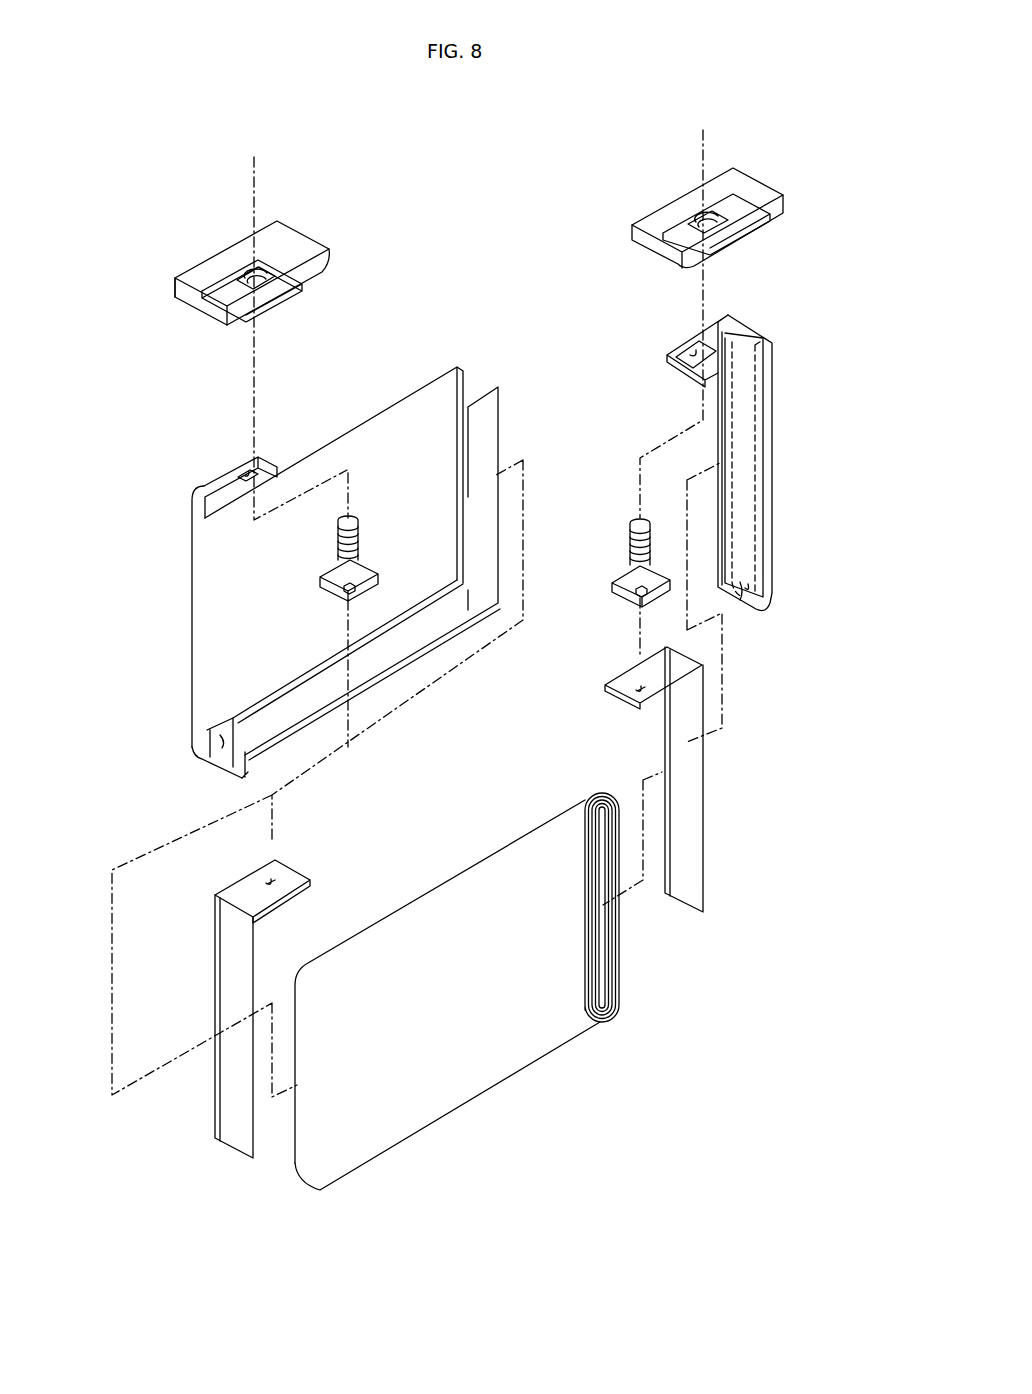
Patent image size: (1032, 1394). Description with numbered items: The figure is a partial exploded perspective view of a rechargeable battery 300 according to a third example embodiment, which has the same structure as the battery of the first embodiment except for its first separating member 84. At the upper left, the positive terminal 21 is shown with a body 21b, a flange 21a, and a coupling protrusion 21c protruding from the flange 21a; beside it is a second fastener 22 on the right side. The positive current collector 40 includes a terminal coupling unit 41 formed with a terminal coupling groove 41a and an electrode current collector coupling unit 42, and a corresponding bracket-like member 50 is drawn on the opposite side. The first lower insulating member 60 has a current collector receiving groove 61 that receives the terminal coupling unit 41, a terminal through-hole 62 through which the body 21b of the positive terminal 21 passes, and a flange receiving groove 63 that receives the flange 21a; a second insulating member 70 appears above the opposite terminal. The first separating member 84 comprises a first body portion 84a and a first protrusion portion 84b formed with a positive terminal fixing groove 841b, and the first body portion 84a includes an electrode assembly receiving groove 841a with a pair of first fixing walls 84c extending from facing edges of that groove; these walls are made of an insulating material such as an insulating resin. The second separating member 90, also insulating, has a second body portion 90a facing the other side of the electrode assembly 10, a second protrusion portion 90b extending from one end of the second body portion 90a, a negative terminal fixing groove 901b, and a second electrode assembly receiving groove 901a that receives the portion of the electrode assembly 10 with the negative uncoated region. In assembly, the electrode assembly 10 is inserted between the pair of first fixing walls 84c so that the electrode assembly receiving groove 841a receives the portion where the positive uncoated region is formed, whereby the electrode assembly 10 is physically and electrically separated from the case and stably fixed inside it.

The rechargeable battery 300 is at (456, 135).
The electrode assembly 10 is at (625, 996).
The positive terminal 21 is at (369, 530).
The flange 21a is at (375, 580).
The body 21b is at (348, 503).
The coupling protrusion 21c is at (350, 600).
The second fastening bolt 22 is at (615, 549).
The positive current collector 40 is at (208, 964).
The terminal coupling unit 41 is at (250, 880).
The terminal coupling groove 41a is at (262, 898).
The electrode current collector coupling unit 42 is at (235, 1115).
The second bracket 50 is at (710, 853).
The first lower insulating member 60 is at (174, 249).
The current collector receiving groove 61 is at (207, 322).
The terminal through-hole 62 is at (268, 278).
The flange receiving groove 63 is at (262, 282).
The second nut member 70 is at (767, 175).
The first separating member 84 is at (152, 522).
The first body portion 84a is at (190, 577).
The first protrusion portion 84b is at (203, 490).
The first fixing walls 84c is at (496, 385).
The electrode assembly receiving groove 841a is at (212, 740).
The positive terminal fixing groove 841b is at (247, 478).
The second separating member 90 is at (794, 357).
The second body portion 90a is at (772, 445).
The second protrusion portion 90b is at (683, 345).
The second electrode assembly receiving groove 901a is at (750, 605).
The negative terminal fixing groove 901b is at (697, 357).